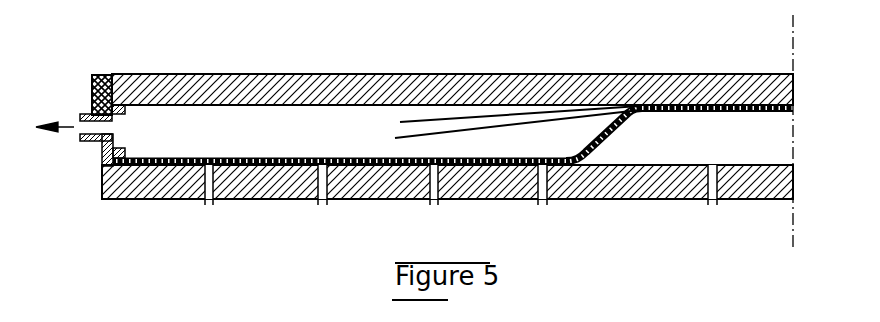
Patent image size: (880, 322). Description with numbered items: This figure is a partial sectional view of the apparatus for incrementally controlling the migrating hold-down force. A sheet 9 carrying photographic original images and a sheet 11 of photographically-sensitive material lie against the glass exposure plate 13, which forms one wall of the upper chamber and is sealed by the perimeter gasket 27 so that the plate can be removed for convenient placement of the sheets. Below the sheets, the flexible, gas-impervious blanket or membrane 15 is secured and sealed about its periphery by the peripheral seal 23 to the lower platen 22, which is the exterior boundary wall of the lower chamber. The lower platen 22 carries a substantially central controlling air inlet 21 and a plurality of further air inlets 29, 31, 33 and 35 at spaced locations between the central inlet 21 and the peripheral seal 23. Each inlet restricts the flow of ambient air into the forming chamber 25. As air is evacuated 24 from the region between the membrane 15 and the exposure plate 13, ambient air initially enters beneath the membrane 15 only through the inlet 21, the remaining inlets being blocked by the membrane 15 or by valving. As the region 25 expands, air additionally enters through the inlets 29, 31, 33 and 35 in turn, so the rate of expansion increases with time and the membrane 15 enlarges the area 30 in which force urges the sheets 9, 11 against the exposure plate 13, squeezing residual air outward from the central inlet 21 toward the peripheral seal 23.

The sheet 9 is at (400, 122).
The sheet of photographically-sensitive materials 11 is at (445, 130).
The glass exposure plate 13 is at (222, 75).
The flexible blanket 15 is at (606, 134).
The controlling air inlet 21 is at (713, 206).
The lower platen 22 is at (793, 190).
The peripheral seal 23 is at (119, 151).
The evacuated air 24 is at (80, 116).
The forming chamber 25 is at (722, 151).
The perimeter gasket 27 is at (100, 75).
The air inlet 29 is at (543, 206).
The area of force application 30 is at (771, 74).
The air inlet 31 is at (434, 206).
The air inlet 33 is at (323, 206).
The air inlet 35 is at (210, 206).